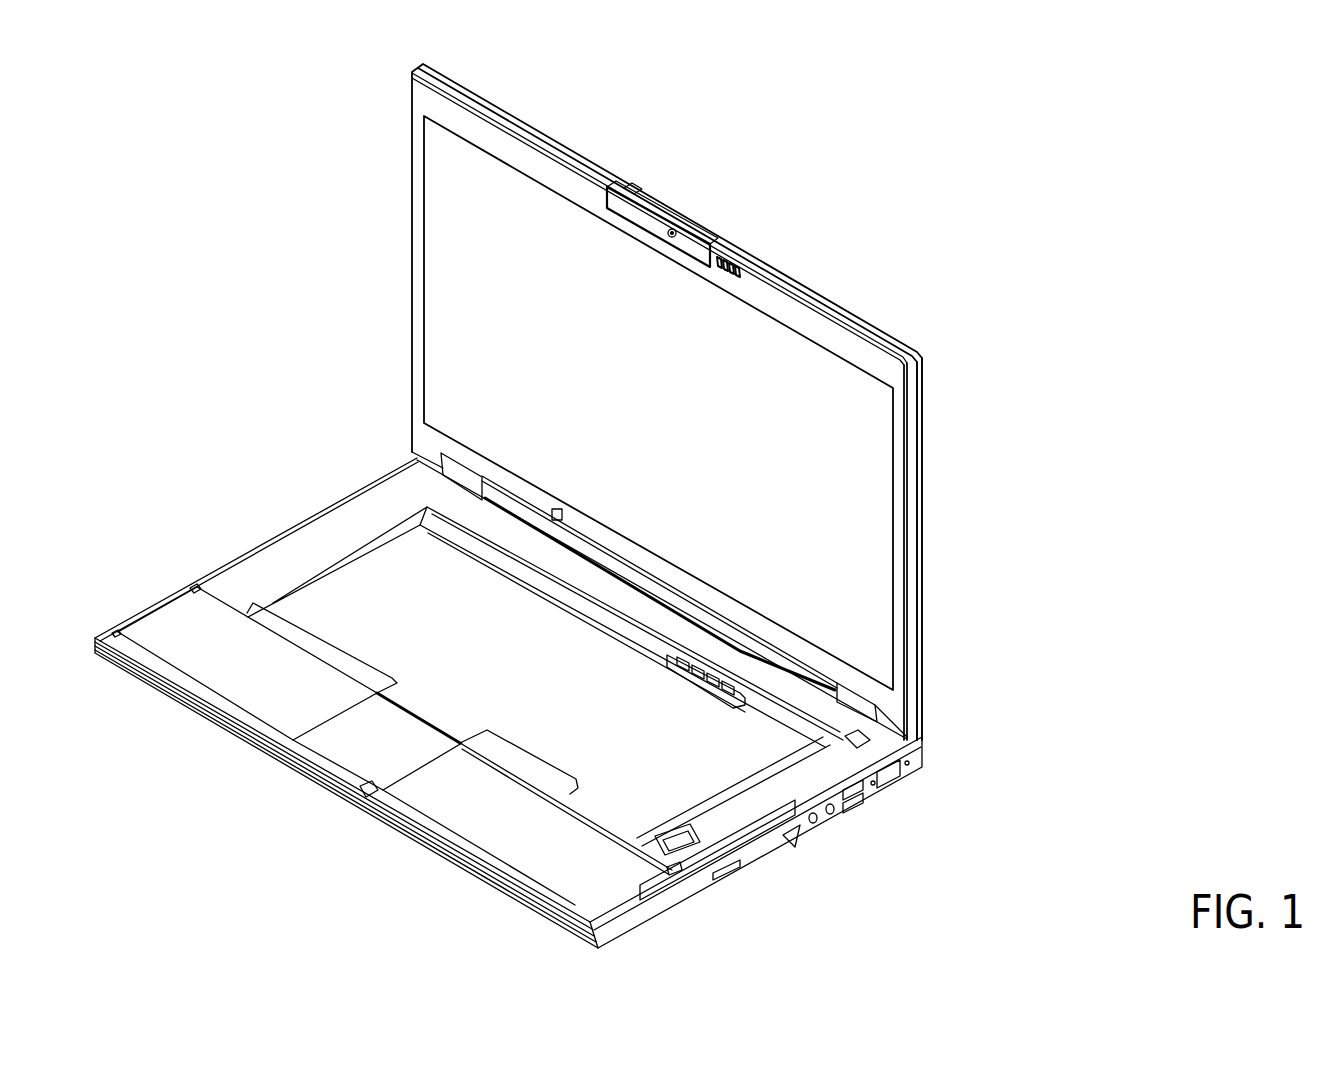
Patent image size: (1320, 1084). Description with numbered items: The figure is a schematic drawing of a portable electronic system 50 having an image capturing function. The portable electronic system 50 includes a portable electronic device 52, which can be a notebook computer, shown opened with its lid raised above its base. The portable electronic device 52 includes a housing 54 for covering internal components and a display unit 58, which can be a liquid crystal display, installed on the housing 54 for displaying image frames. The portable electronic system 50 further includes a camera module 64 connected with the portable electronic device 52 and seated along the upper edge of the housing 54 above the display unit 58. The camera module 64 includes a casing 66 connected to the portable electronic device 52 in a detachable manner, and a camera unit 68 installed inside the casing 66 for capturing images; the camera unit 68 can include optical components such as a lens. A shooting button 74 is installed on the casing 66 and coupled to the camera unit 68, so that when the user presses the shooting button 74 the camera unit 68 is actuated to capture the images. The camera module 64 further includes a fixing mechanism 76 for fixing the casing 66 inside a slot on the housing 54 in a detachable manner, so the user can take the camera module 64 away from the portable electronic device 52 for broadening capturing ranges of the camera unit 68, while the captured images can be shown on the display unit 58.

The portable electronic system 50 is at (1083, 204).
The portable electronic device 52 is at (942, 412).
The housing 54 is at (898, 462).
The display unit 58 is at (452, 207).
The camera module 64 is at (726, 222).
The casing 66 is at (656, 208).
The camera unit 68 is at (676, 229).
The shooting button 74 is at (636, 191).
The fixing mechanism 76 is at (740, 259).